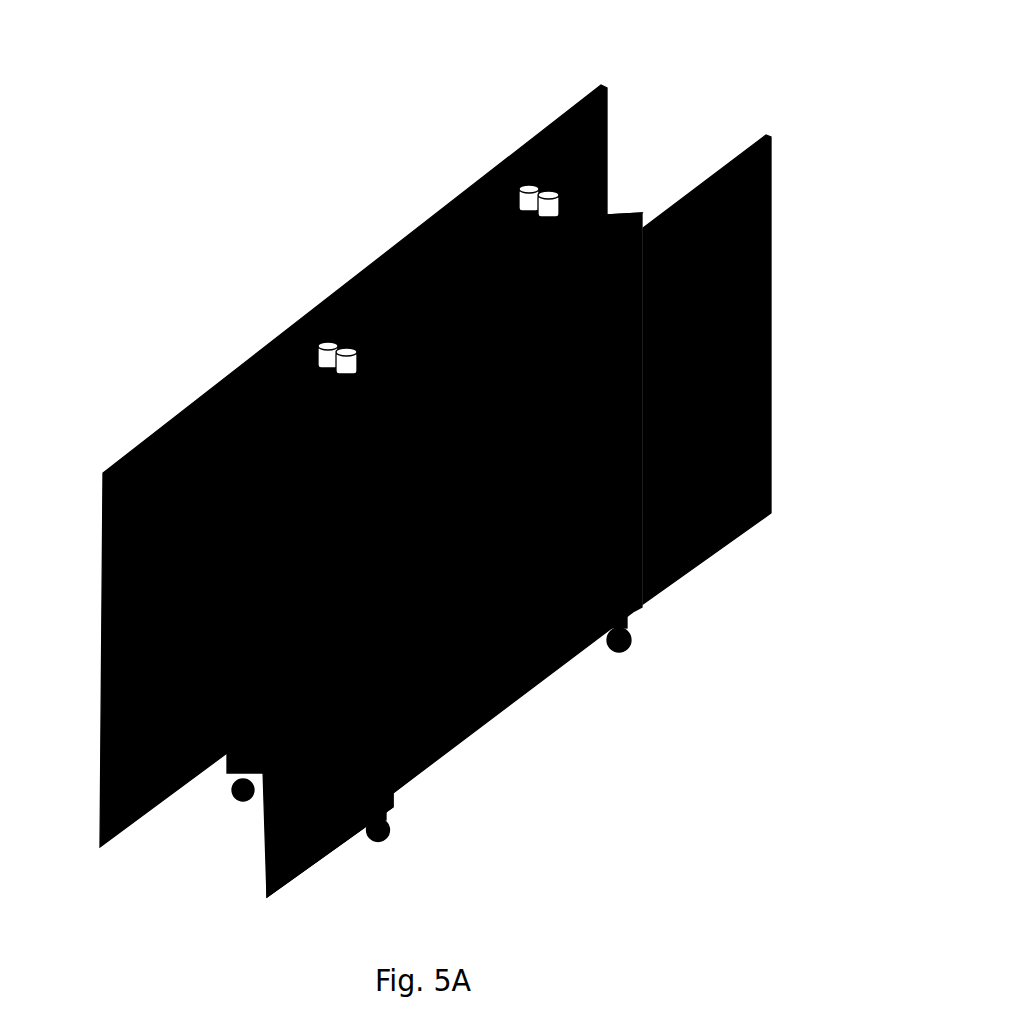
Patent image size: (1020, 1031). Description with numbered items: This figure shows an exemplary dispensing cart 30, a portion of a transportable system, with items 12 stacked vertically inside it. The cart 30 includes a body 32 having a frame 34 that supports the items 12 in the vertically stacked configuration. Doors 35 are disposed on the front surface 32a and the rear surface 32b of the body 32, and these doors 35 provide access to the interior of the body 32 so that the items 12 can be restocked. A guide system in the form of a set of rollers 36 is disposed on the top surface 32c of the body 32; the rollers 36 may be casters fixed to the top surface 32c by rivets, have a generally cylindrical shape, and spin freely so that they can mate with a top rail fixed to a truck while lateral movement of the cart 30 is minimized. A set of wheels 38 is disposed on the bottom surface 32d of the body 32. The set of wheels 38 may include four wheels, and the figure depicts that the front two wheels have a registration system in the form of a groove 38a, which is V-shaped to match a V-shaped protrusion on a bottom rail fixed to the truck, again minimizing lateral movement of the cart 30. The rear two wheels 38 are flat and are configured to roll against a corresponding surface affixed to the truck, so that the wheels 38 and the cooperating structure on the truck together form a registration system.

The dispensing cart 30 is at (442, 485).
The body 32 is at (442, 525).
The front surface 32a is at (413, 397).
The rear surface 32b is at (453, 197).
The top surface 32c is at (405, 293).
The bottom surface 32d is at (263, 783).
The frame 34 is at (565, 463).
The doors 35 is at (713, 182).
The rollers 36 is at (320, 347).
The wheels 38 is at (373, 840).
The groove 38a is at (610, 652).
The items 12 is at (605, 517).